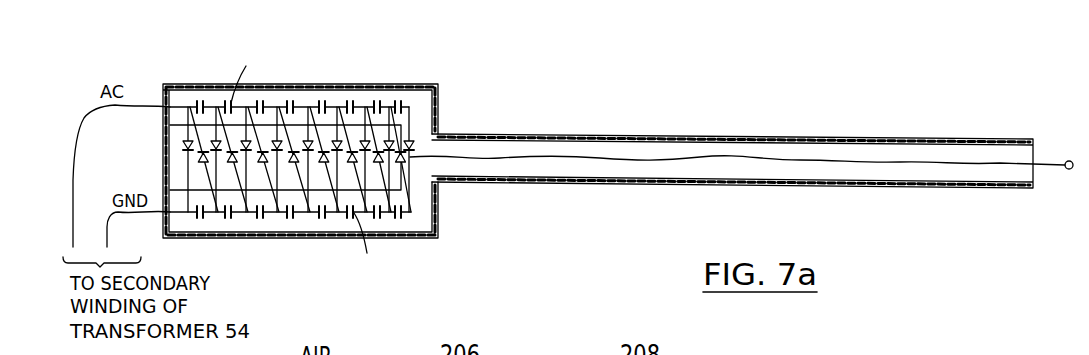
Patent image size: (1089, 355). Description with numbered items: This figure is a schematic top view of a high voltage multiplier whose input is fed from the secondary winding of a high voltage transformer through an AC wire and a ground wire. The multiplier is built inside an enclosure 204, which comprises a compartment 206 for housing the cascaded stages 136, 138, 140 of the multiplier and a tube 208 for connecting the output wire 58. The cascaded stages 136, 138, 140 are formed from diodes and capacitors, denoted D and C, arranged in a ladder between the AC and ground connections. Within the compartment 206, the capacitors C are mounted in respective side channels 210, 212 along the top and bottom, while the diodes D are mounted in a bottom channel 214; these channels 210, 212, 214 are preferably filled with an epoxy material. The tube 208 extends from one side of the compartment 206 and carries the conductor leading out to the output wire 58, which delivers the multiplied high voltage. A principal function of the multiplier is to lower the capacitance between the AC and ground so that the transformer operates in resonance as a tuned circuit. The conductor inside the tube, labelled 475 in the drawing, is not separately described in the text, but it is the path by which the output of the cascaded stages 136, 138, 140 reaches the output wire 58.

The enclosure 204 is at (515, 78).
The compartment 206 is at (416, 84).
The tube 208 is at (590, 134).
The side channel 210 is at (179, 107).
The side channel 212 is at (302, 238).
The bottom channel 214 is at (174, 137).
The cascaded stage 136 is at (195, 168).
The cascaded stage 138 is at (226, 168).
The cascaded stage 140 is at (263, 168).
The high voltage output wire 475 is at (783, 160).
The output wire 58 is at (1064, 162).